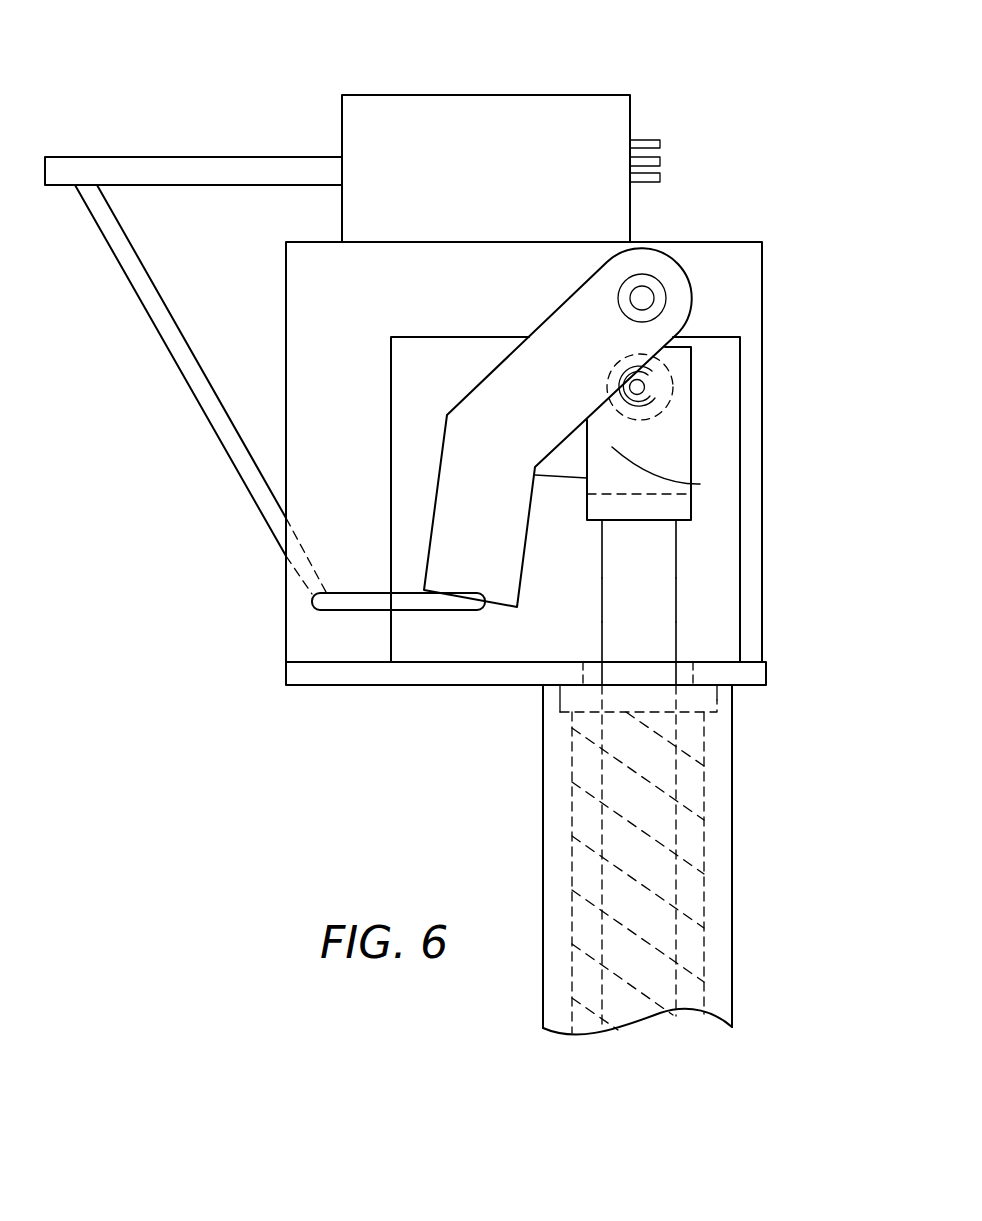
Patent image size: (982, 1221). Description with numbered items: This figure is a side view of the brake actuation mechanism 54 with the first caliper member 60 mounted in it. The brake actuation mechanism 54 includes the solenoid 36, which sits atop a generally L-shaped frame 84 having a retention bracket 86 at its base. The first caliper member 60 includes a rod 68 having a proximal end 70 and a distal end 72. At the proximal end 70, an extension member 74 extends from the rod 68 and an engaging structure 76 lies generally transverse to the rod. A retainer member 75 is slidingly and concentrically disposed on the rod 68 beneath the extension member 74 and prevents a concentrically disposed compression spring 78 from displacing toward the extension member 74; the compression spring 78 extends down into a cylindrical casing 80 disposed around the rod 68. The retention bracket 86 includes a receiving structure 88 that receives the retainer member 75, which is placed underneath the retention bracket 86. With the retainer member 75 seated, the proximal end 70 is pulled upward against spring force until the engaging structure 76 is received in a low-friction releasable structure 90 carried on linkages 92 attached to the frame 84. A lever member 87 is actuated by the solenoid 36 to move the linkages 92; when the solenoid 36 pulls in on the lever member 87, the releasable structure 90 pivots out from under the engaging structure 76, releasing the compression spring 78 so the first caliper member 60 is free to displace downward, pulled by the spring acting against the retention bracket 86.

The brake actuation mechanism 54 is at (176, 80).
The solenoid 36 is at (492, 118).
The frame 84 is at (298, 340).
The retention bracket 86 is at (480, 678).
The lever member 87 is at (236, 458).
The linkages 92 is at (630, 262).
The extension member 74 is at (682, 462).
The engaging structure 76 is at (660, 407).
The releasable structure 90 is at (677, 475).
The proximal end 70 is at (670, 545).
The first caliper member 60 is at (668, 595).
The rod 68 is at (668, 641).
The receiving structure 88 is at (693, 667).
The retainer member 75 is at (707, 697).
The cylindrical casing 80 is at (733, 823).
The compression spring 78 is at (685, 770).
The distal end 72 is at (633, 1010).